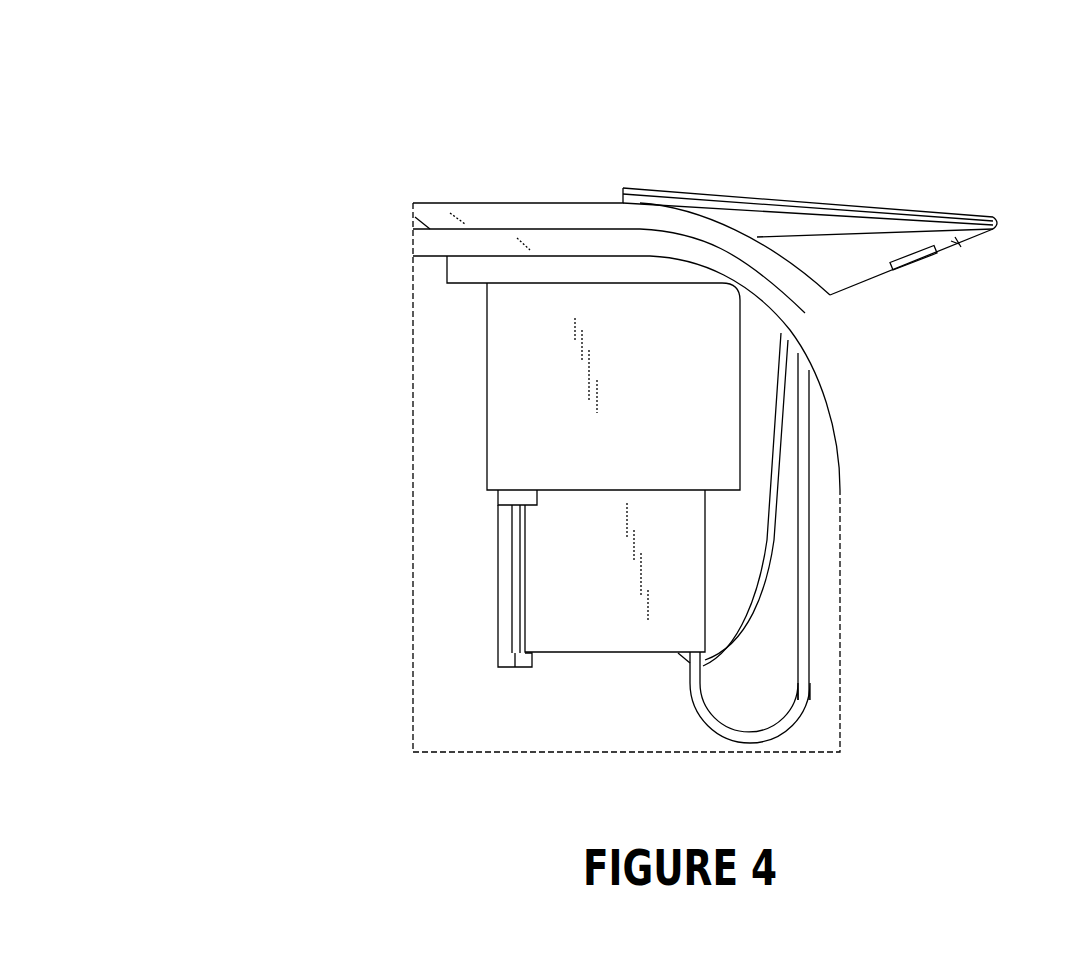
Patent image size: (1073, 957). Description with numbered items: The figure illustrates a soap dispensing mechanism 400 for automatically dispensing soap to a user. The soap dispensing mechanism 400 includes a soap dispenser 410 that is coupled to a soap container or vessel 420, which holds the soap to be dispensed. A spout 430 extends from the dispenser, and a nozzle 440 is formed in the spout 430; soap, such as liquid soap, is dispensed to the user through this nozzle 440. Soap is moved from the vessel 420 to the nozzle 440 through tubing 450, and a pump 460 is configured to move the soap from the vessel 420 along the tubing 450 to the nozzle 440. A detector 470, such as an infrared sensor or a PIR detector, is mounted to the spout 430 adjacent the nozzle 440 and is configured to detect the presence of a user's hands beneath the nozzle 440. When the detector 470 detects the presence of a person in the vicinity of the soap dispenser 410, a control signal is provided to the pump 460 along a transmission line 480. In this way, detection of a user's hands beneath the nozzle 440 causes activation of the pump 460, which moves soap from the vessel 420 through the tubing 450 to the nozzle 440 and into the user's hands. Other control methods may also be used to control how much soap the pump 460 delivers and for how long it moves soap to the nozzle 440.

The soap dispensing mechanism 400 is at (302, 85).
The soap dispenser 410 is at (623, 186).
The soap container or vessel 420 is at (502, 403).
The spout 430 is at (862, 268).
The nozzle 440 is at (957, 243).
The tubing 450 is at (690, 688).
The pump 460 is at (565, 647).
The detector 470 is at (917, 260).
The transmission line 480 is at (727, 658).